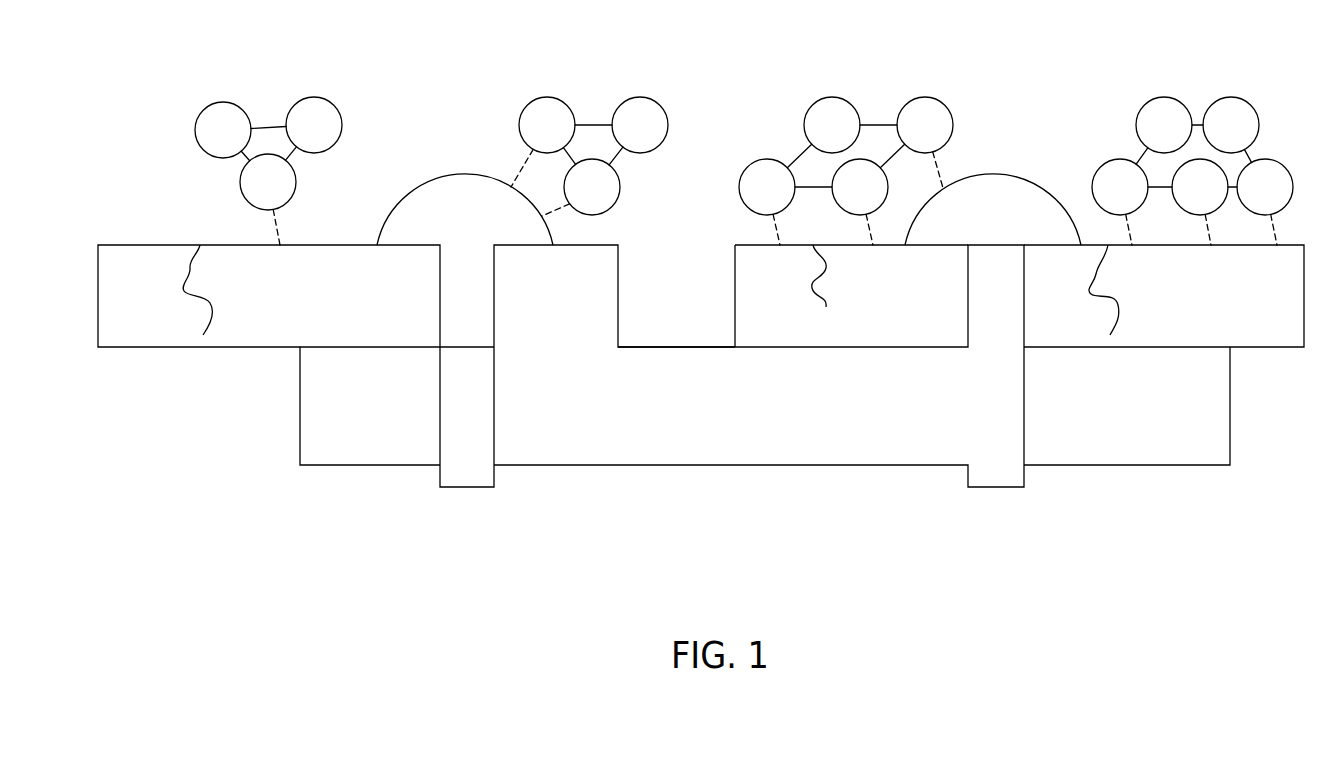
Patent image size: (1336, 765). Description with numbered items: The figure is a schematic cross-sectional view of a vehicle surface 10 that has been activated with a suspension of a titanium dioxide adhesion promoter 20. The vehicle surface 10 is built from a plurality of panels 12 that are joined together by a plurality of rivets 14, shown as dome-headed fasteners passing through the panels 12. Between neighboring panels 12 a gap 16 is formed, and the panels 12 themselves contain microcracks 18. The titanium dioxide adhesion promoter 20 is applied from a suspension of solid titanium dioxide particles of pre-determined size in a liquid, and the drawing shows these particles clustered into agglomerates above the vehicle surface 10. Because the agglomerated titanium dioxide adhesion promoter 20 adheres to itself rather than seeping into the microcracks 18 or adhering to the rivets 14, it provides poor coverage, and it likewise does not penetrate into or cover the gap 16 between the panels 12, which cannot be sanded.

The vehicle surface 10 is at (222, 530).
The panel 12 is at (313, 309).
The rivet 14 is at (451, 229).
The gap 16 is at (659, 307).
The microcrack 18 is at (203, 303).
The titanium dioxide adhesion promoter 20 is at (358, 87).